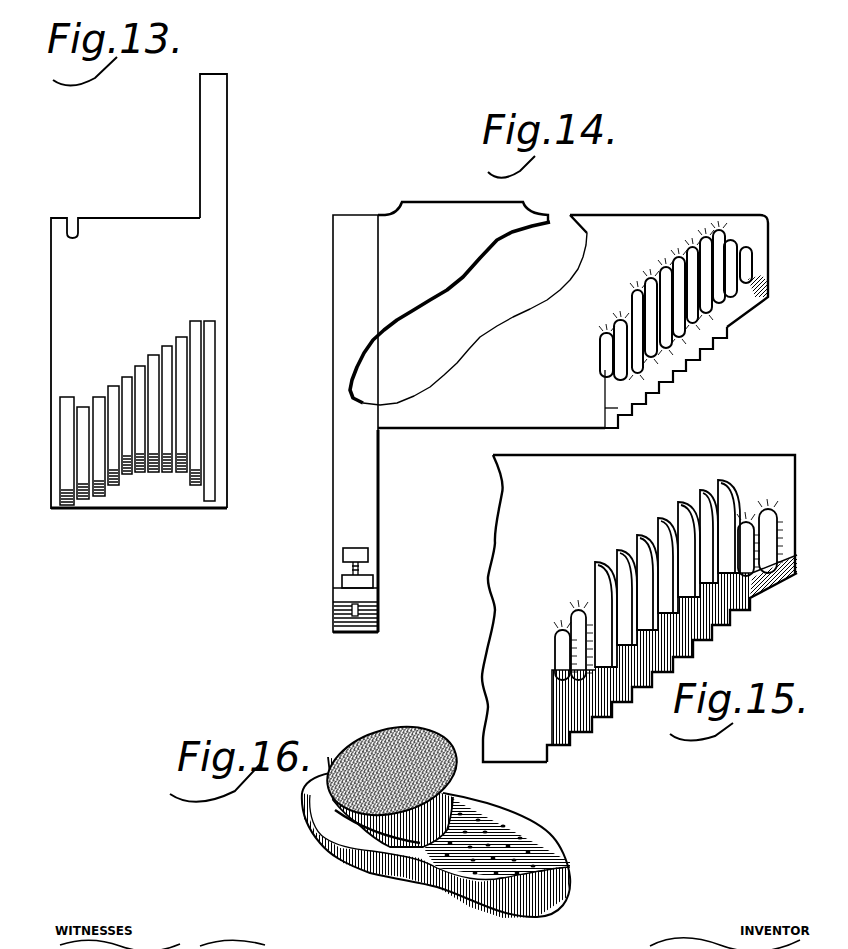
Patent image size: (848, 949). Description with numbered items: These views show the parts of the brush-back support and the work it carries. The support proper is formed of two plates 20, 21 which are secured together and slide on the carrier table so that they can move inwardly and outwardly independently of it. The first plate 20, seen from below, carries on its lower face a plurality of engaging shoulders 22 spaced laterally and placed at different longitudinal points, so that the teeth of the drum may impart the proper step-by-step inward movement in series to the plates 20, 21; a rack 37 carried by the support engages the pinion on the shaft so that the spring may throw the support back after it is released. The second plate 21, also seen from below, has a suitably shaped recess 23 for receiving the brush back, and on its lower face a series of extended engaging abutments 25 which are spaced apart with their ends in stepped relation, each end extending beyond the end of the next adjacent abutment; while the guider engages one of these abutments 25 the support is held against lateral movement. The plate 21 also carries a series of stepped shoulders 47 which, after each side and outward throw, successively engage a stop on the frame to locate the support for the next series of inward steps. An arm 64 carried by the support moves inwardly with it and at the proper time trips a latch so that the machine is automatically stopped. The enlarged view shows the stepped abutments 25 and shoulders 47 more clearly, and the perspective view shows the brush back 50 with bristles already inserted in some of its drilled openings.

In FIG. 13, the plate 20 is at (139, 363).
In FIG. 14, the plate 21 is at (573, 315).
In FIG. 15, the plate 21 is at (638, 608).
In FIG. 13, the engaging shoulders 22 is at (209, 321).
In FIG. 14, the recess 23 is at (453, 366).
In FIG. 14, the extended engaging abutments 25 is at (745, 247).
In FIG. 15, the extended engaging abutments 25 is at (748, 507).
In FIG. 13, the rack 37 is at (215, 137).
In FIG. 14, the stepped shoulders 47 is at (675, 372).
In FIG. 15, the stepped shoulders 47 is at (680, 653).
In FIG. 16, the brush back 50 is at (528, 840).
In FIG. 14, the arm 64 is at (333, 496).